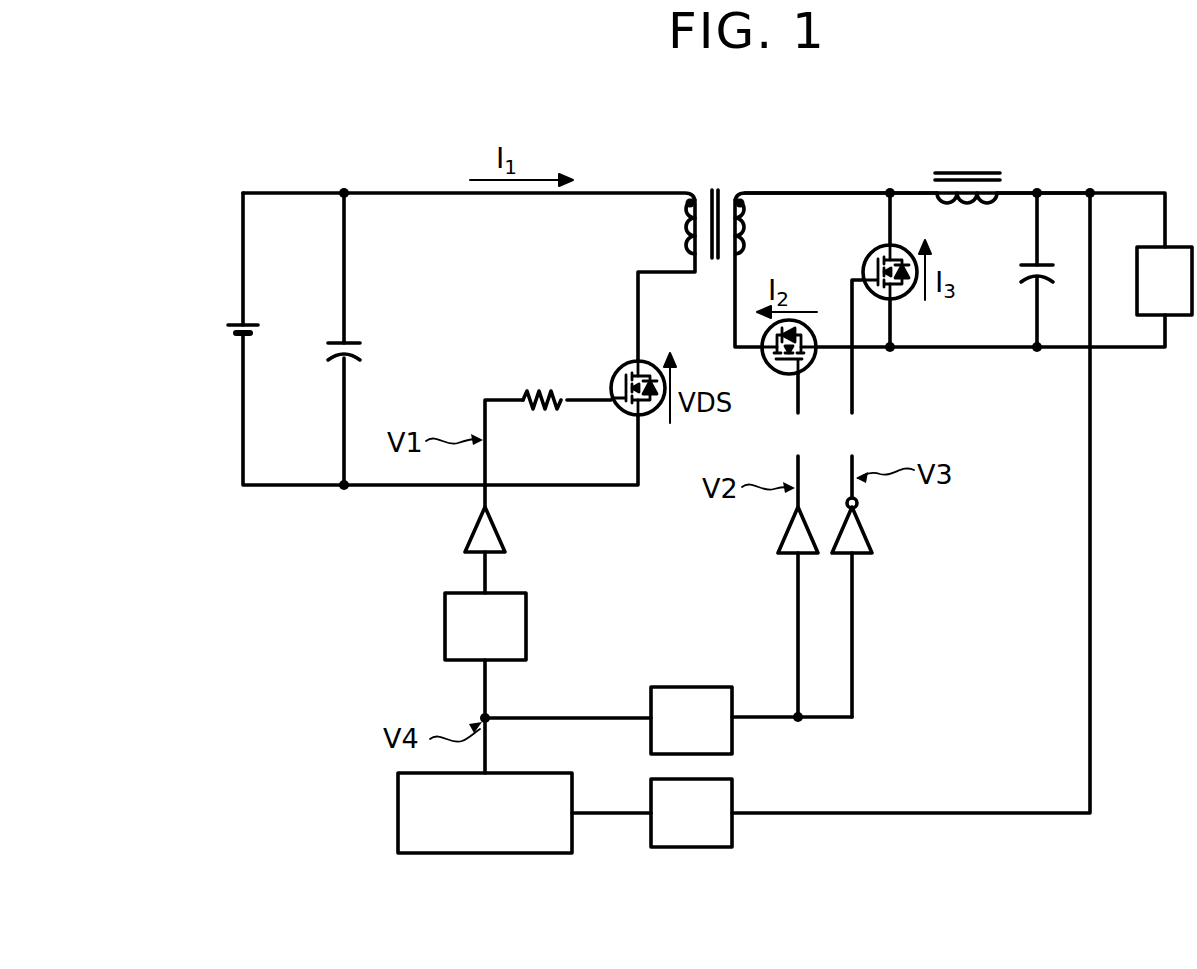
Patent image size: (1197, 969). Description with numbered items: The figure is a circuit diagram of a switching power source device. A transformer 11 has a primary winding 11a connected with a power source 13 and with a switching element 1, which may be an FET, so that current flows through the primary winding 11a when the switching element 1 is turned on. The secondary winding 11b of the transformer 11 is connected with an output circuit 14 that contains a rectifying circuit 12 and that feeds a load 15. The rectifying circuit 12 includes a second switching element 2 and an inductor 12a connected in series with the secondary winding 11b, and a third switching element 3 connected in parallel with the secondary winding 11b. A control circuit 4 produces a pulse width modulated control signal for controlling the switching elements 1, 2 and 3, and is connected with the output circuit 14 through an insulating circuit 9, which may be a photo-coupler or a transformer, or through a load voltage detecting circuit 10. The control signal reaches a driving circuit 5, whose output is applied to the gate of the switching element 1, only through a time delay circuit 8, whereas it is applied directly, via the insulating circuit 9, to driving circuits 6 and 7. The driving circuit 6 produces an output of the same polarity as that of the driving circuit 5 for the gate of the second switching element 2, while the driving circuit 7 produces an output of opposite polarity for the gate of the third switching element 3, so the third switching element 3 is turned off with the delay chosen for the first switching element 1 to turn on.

The switching element 1 is at (611, 377).
The second switching element 2 is at (786, 367).
The third switching element 3 is at (864, 270).
The control circuit 4 is at (494, 825).
The driving circuit 5 is at (494, 528).
The driving circuit 6 is at (788, 533).
The driving circuit 7 is at (852, 533).
The time delay circuit 8 is at (494, 641).
The insulating circuit 9 is at (700, 735).
The load voltage detecting circuit 10 is at (709, 828).
The transformer 11 is at (711, 181).
The primary winding 11a is at (691, 228).
The secondary winding 11b is at (746, 224).
The rectifying circuit 12 is at (822, 190).
The inductor 12a is at (958, 174).
The power source 13 is at (243, 332).
The output circuit 14 is at (1056, 190).
The load 15 is at (1181, 297).